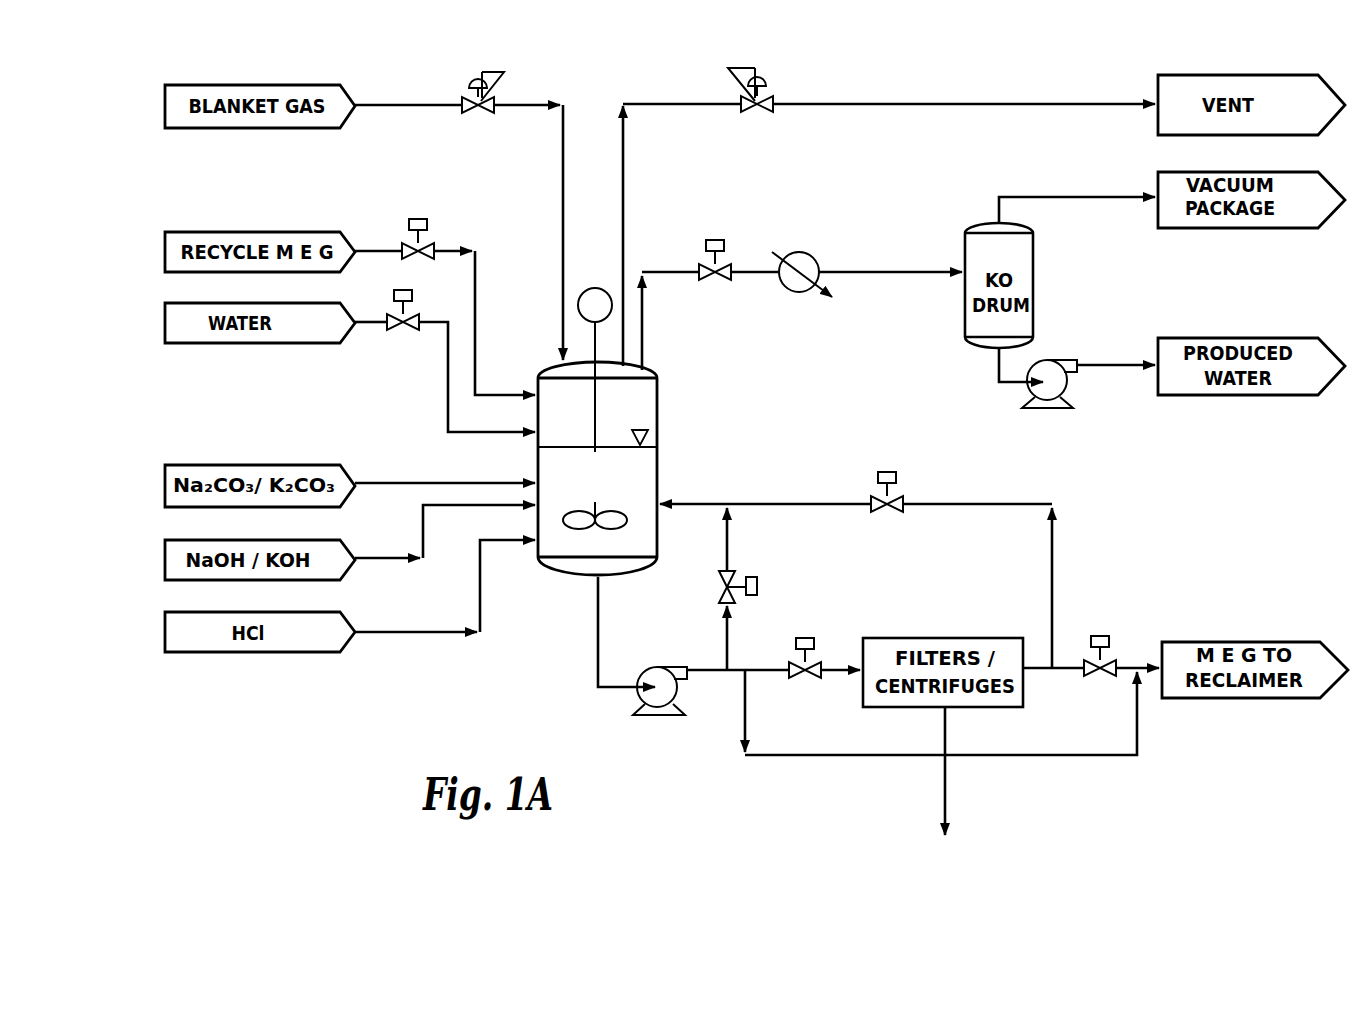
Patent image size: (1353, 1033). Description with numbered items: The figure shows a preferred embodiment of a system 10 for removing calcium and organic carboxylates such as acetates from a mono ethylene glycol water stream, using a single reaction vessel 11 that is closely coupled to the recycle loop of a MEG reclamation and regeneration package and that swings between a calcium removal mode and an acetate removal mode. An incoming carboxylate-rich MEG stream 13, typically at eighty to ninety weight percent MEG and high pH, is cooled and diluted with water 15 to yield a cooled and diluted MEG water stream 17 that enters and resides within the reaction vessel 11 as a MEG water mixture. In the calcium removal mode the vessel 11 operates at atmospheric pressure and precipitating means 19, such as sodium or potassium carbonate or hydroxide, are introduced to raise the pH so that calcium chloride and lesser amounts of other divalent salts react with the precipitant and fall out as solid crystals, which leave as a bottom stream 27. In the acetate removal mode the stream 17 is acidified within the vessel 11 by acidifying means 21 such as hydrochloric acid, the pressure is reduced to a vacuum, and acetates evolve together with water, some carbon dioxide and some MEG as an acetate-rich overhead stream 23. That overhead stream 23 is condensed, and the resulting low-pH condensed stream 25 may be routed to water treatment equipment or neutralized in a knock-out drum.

The system 10 is at (675, 427).
The reaction vessel 11 is at (660, 477).
The incoming carboxylate-rich MEG stream 13 is at (480, 268).
The water 15 is at (447, 360).
The cooled and diluted MEG water stream 17 is at (557, 542).
The precipitating means 19 is at (395, 480).
The acidifying means 21 is at (405, 633).
The acetate-rich overhead stream 23 is at (643, 337).
The condensed stream 25 is at (888, 272).
The bottom stream 27 is at (597, 638).